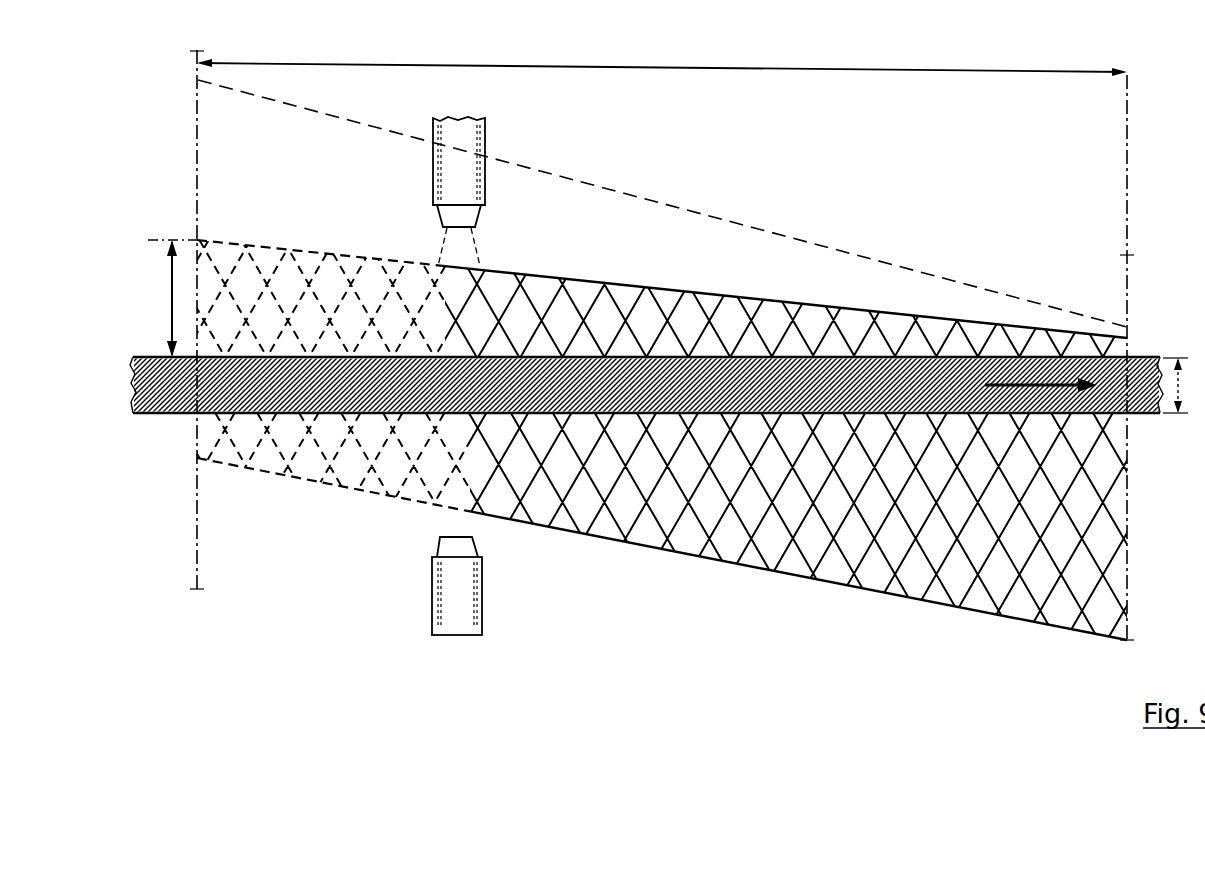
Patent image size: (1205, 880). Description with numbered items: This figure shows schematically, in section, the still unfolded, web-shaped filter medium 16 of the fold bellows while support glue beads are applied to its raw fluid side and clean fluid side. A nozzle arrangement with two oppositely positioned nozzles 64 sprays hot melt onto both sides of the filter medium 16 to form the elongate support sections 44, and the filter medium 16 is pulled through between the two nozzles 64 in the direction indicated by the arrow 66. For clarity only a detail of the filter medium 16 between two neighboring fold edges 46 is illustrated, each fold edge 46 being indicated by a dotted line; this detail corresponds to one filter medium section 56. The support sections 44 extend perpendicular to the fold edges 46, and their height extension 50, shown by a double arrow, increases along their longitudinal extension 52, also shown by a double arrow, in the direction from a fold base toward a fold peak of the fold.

The filter medium 16 is at (155, 375).
The support sections 44 is at (372, 275).
The fold edges 46 is at (196, 420).
The height extension 50 is at (168, 300).
The longitudinal extension 52 is at (918, 73).
The filter medium section 56 is at (617, 350).
The nozzles 64 is at (467, 148).
The arrow 66 is at (1050, 378).